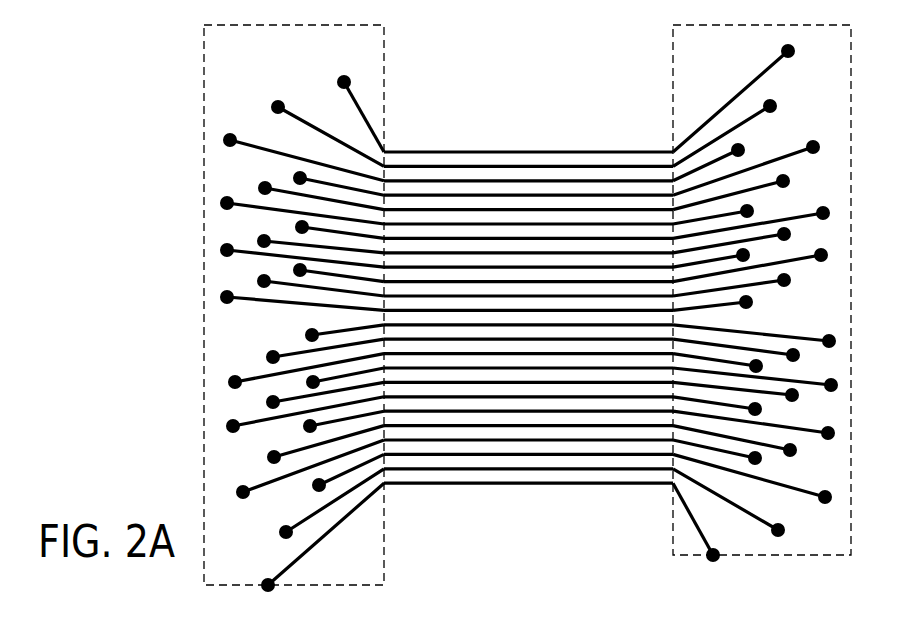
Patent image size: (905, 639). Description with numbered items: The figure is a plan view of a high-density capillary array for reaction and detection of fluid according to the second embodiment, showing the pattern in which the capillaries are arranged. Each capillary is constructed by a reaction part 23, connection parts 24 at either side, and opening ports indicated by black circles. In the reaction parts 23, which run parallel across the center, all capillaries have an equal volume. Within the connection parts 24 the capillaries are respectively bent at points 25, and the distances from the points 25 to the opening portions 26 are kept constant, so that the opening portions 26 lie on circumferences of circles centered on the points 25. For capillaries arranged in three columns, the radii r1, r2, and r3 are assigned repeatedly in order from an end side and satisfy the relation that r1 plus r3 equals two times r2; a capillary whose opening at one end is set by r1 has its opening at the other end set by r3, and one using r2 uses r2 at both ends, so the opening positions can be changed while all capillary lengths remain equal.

The reaction parts 23 is at (386, 54).
The connection parts 24 is at (204, 585).
The points 25 is at (671, 486).
The opening portions 26 is at (337, 77).
The radius r1 is at (385, 147).
The radius r2 is at (386, 152).
The radius r3 is at (384, 166).